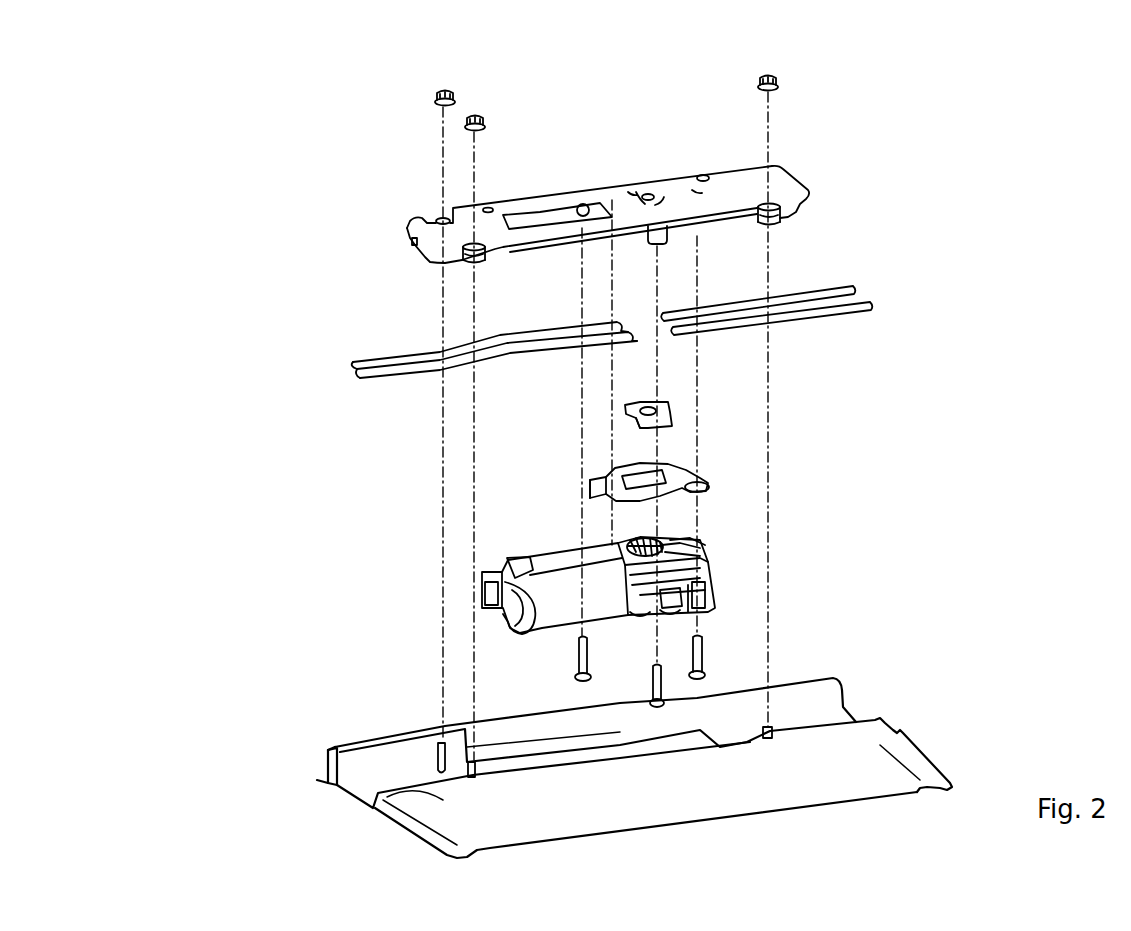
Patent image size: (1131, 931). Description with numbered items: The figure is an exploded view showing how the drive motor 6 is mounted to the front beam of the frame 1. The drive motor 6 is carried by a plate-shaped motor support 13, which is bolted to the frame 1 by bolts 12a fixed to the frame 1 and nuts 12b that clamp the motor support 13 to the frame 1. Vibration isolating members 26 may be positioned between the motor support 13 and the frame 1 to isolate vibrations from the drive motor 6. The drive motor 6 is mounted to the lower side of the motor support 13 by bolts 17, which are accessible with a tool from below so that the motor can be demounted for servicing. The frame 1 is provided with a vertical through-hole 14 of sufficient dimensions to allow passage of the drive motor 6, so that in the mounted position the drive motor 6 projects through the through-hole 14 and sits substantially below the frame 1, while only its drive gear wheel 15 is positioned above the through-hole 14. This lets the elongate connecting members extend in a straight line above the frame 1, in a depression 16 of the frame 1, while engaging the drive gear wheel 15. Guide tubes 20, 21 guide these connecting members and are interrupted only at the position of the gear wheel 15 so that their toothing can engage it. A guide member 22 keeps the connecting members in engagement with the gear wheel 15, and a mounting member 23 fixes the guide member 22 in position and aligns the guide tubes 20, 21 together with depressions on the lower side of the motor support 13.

The frame 1 is at (917, 758).
The drive motor 6 is at (487, 602).
The bolts 12a is at (470, 775).
The nuts 12b is at (463, 123).
The motor support 13 is at (783, 190).
The through-hole 14 is at (527, 760).
The drive gear wheel 15 is at (707, 555).
The depression 16 is at (363, 780).
The bolts 17 is at (587, 648).
The guide tube 20 is at (375, 376).
The guide tube 21 is at (847, 293).
The guide member 22 is at (673, 421).
The mounting member 23 is at (710, 490).
The vibration isolating members 26 is at (474, 265).